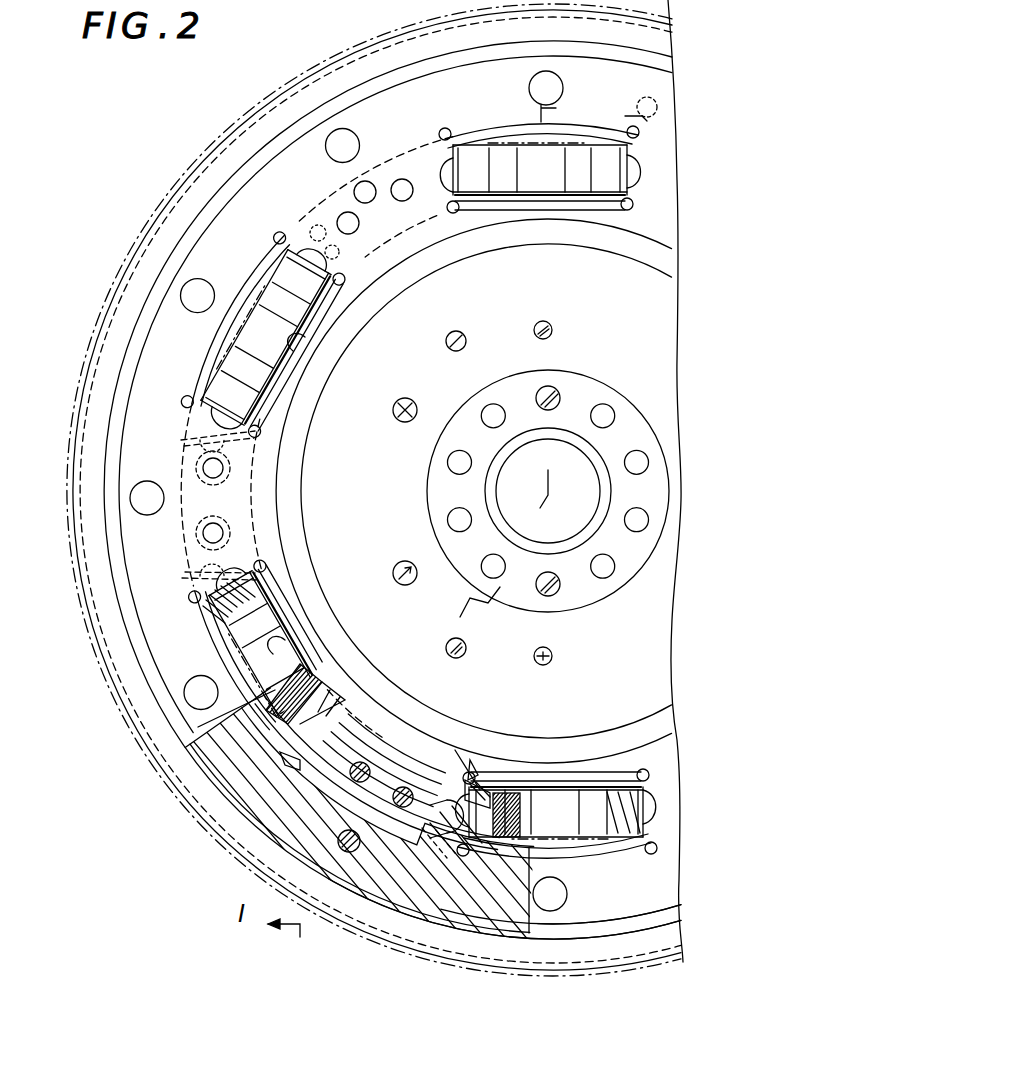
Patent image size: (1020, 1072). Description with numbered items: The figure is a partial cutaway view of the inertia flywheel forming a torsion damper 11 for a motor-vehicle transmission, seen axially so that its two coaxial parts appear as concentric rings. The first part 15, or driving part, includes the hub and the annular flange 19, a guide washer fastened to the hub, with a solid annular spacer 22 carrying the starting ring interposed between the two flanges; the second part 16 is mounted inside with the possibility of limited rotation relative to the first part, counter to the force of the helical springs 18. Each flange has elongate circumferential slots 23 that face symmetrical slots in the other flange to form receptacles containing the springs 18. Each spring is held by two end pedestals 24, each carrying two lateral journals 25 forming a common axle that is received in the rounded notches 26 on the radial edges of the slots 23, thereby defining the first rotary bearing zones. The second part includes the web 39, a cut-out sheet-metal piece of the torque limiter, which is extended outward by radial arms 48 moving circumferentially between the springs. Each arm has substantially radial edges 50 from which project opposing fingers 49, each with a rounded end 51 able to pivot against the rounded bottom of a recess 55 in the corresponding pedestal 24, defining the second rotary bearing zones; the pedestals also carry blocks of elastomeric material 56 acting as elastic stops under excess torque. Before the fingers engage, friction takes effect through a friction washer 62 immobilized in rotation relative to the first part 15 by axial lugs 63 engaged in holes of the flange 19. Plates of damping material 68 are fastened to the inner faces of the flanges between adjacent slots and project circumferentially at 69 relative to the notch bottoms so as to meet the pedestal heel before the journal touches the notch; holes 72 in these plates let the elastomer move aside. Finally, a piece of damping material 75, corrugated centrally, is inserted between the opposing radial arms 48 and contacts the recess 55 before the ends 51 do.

The torsion damper 11 is at (135, 828).
The first part 15 is at (133, 689).
The second part 16 is at (312, 800).
The helical springs 18 is at (336, 690).
The flange 19 is at (550, 925).
The spacer 22 is at (400, 915).
The slots 23 is at (292, 343).
The end pedestals 24 is at (280, 262).
The lateral journals 25 is at (316, 230).
The rounded notches 26 is at (328, 244).
The web 39 is at (430, 752).
The radial arms 48 is at (356, 849).
The fingers 49 is at (305, 775).
The radial edges 50 is at (362, 728).
The rounded end 51 is at (455, 838).
The recess 55 is at (284, 758).
The blocks of elastomeric material 56 is at (503, 793).
The friction washer 62 is at (406, 422).
The axial lugs 63 is at (535, 335).
The plates of damping material 68 is at (412, 228).
The projecting portion 69 is at (196, 406).
The holes 72 is at (180, 438).
The piece of damping material 75 is at (462, 750).